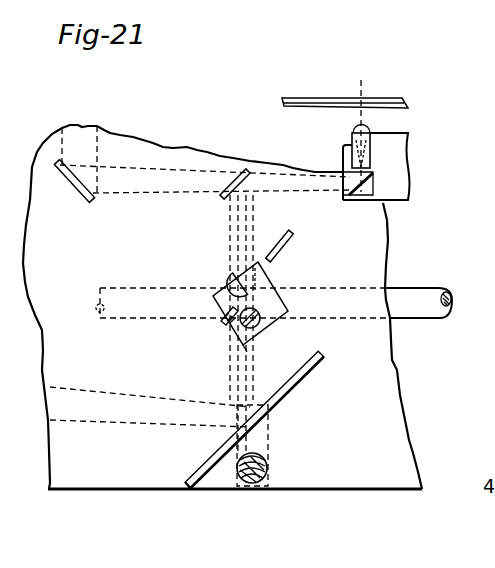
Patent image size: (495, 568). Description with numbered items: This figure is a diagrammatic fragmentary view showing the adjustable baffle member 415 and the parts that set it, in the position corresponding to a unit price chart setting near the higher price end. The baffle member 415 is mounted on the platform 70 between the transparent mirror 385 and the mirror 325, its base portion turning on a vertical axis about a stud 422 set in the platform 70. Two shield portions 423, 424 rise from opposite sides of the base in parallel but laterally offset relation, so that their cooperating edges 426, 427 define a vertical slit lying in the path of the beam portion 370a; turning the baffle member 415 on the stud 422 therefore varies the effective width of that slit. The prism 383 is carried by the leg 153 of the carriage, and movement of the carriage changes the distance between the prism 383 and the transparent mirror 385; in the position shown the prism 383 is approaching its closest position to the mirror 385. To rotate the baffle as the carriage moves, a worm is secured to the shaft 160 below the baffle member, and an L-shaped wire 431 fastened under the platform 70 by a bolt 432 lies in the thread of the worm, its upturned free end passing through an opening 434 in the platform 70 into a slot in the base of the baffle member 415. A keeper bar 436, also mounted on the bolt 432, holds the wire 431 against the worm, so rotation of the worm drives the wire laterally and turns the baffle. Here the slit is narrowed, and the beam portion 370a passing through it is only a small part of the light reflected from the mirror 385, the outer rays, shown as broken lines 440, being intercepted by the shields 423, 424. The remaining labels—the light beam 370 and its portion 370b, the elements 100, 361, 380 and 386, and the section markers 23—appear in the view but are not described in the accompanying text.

The platform 70 is at (107, 489).
The document plate 100 is at (393, 100).
The leg 153 is at (398, 168).
The shaft 160 is at (438, 290).
The section line 23 is at (236, 218).
The mirror 325 is at (197, 489).
The mirror 361 is at (291, 232).
The light beam 370 is at (363, 80).
The beam 370a is at (62, 420).
The light beam portion 370b is at (81, 126).
The lens 380 is at (367, 142).
The prism 383 is at (368, 177).
The transparent mirror 385 is at (248, 170).
The mirror 386 is at (74, 189).
The adjustable baffle member 415 is at (227, 348).
The stud 422 is at (240, 320).
The shield portion 423 is at (278, 325).
The shield portion 424 is at (222, 313).
The cooperating edge 426 is at (259, 340).
The cooperating edge 427 is at (237, 296).
The L-shaped wire 431 is at (257, 432).
The bolt 432 is at (266, 472).
The opening 434 is at (234, 268).
The keeper bar 436 is at (270, 447).
The broken lines 440 is at (228, 216).